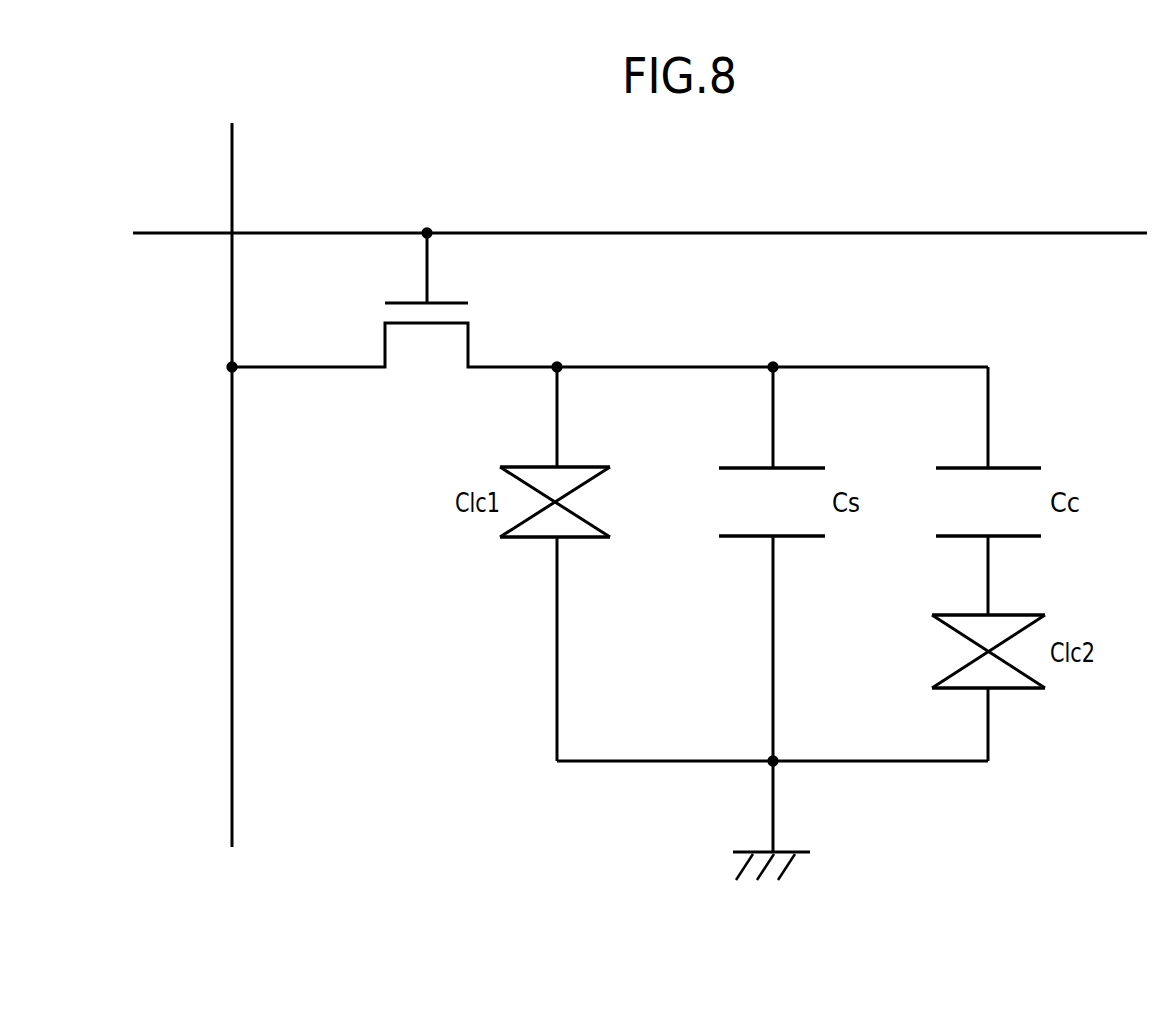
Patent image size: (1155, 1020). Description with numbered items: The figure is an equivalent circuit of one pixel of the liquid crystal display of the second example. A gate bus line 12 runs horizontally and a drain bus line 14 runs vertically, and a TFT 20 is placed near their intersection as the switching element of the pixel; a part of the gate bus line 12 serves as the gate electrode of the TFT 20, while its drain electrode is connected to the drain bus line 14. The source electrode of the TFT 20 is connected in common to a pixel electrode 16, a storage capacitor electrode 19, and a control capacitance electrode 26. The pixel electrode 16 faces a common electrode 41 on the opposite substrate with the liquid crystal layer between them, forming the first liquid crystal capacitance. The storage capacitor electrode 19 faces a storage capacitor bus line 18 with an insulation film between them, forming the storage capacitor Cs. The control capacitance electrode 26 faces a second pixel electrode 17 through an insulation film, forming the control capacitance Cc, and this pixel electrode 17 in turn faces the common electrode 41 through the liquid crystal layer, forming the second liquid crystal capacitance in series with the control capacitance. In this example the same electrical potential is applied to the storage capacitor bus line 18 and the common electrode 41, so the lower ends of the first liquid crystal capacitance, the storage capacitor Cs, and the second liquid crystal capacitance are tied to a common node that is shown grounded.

The gate bus line 12 is at (173, 232).
The drain bus line 14 is at (234, 162).
The TFT 20 is at (487, 313).
The pixel electrode 16 is at (520, 466).
The common electrode 41 is at (520, 539).
The storage capacitor electrode 19 is at (739, 466).
The storage capacitor bus line 18 is at (740, 538).
The control capacitance electrode 26 is at (1020, 466).
The pixel electrode 17 is at (1020, 538).